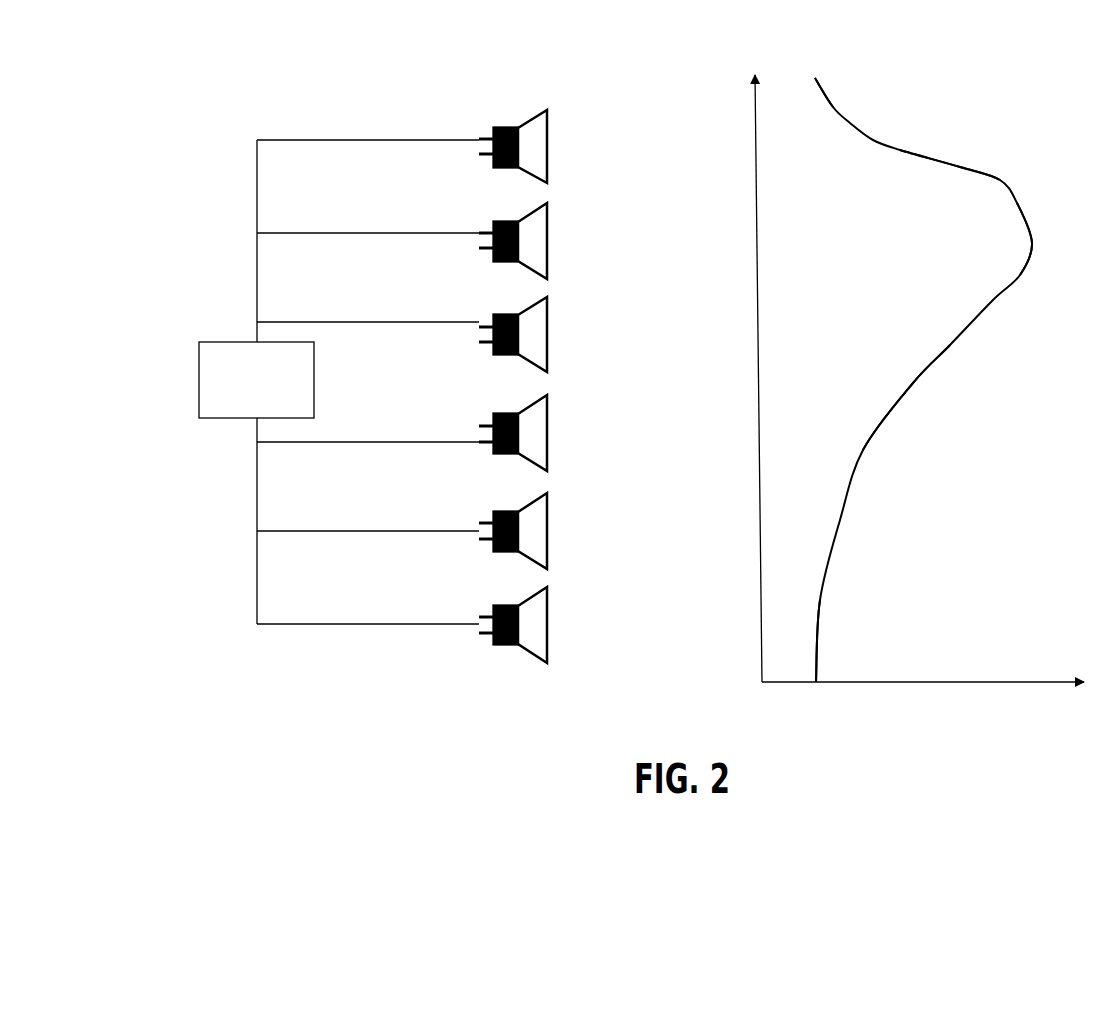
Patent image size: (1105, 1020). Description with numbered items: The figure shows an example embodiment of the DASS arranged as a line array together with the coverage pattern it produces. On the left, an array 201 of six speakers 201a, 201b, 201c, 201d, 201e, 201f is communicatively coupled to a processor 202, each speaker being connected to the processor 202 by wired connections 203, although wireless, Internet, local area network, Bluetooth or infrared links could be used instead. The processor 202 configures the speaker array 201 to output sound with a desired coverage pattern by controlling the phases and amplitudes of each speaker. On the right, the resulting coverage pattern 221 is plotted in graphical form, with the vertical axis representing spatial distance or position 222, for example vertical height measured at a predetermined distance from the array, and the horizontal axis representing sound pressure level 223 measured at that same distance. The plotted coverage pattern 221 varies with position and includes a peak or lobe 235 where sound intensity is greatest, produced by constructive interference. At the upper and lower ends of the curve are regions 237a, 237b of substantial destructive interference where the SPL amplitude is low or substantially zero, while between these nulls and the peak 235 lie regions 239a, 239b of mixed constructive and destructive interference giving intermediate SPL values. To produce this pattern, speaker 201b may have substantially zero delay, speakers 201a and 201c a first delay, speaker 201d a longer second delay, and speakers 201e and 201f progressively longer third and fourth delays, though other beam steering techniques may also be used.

The array of speakers 201 is at (529, 68).
The speaker 201a is at (548, 144).
The speaker 201b is at (548, 242).
The speaker 201c is at (548, 332).
The speaker 201d is at (548, 431).
The speaker 201e is at (548, 530).
The speaker 201f is at (548, 623).
The processor 202 is at (199, 381).
The wired connections 203 is at (257, 187).
The coverage pattern 221 is at (870, 133).
The position 222 is at (755, 118).
The sound pressure level 223 is at (1040, 688).
The peak 235 is at (1034, 222).
The region of destructive interference 237a is at (850, 73).
The region of destructive interference 237b is at (857, 625).
The region of mixed interference 239a is at (960, 153).
The region of mixed interference 239b is at (973, 375).